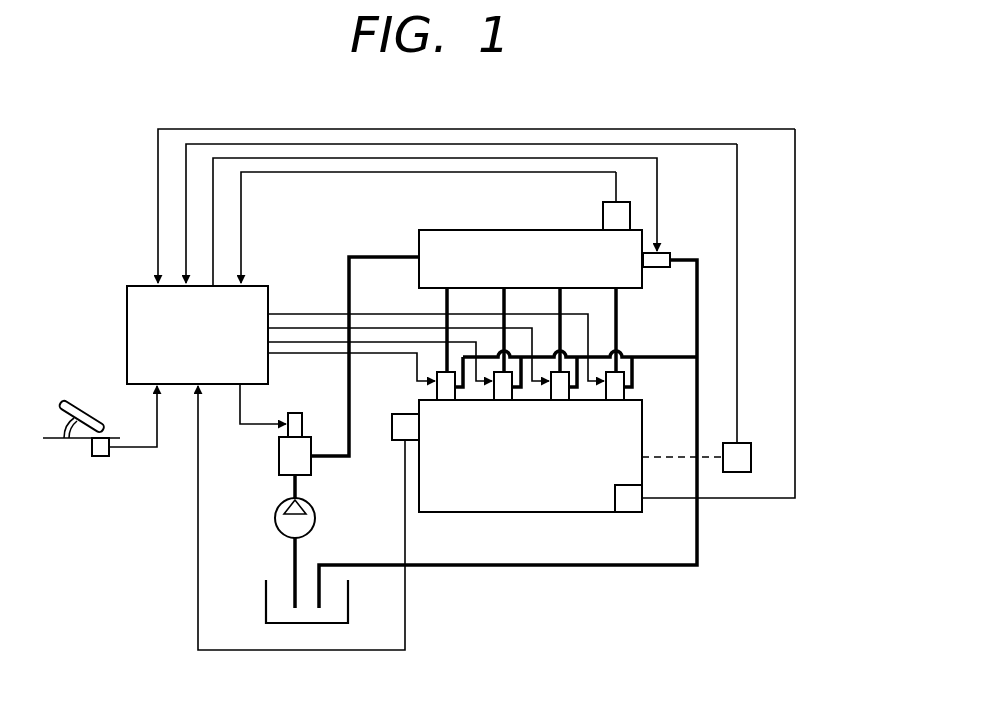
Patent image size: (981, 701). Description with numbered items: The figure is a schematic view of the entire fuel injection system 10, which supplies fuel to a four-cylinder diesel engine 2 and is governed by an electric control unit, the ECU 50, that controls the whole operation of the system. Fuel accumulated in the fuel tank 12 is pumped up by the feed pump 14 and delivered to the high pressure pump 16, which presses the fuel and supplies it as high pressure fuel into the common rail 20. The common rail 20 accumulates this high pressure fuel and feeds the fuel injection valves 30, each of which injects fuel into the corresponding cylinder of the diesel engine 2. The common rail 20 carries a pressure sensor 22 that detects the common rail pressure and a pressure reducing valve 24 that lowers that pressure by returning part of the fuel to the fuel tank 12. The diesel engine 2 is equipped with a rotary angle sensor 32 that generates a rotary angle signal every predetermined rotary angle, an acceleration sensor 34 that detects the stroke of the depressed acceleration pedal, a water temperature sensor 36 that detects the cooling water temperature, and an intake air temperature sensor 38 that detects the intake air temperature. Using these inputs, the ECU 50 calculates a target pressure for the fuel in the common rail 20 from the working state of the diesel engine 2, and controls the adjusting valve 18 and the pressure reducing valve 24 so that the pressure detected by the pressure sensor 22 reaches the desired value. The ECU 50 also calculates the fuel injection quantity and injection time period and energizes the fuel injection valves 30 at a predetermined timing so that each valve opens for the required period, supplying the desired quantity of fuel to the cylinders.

The fuel injection system 10 is at (128, 175).
The electric control unit (ECU) 50 is at (127, 312).
The common rail 20 is at (475, 230).
The pressure sensor 22 is at (603, 216).
The pressure reducing valve 24 is at (665, 250).
The fuel injection valves 30 is at (437, 389).
The adjusting valve 18 is at (298, 413).
The high pressure pump 16 is at (279, 456).
The feed pump 14 is at (275, 516).
The fuel tank 12 is at (266, 599).
The acceleration sensor 34 is at (100, 457).
The intake air temperature sensor 38 is at (392, 440).
The diesel engine 2 is at (490, 512).
The water temperature sensor 36 is at (642, 505).
The rotary angle sensor 32 is at (745, 443).